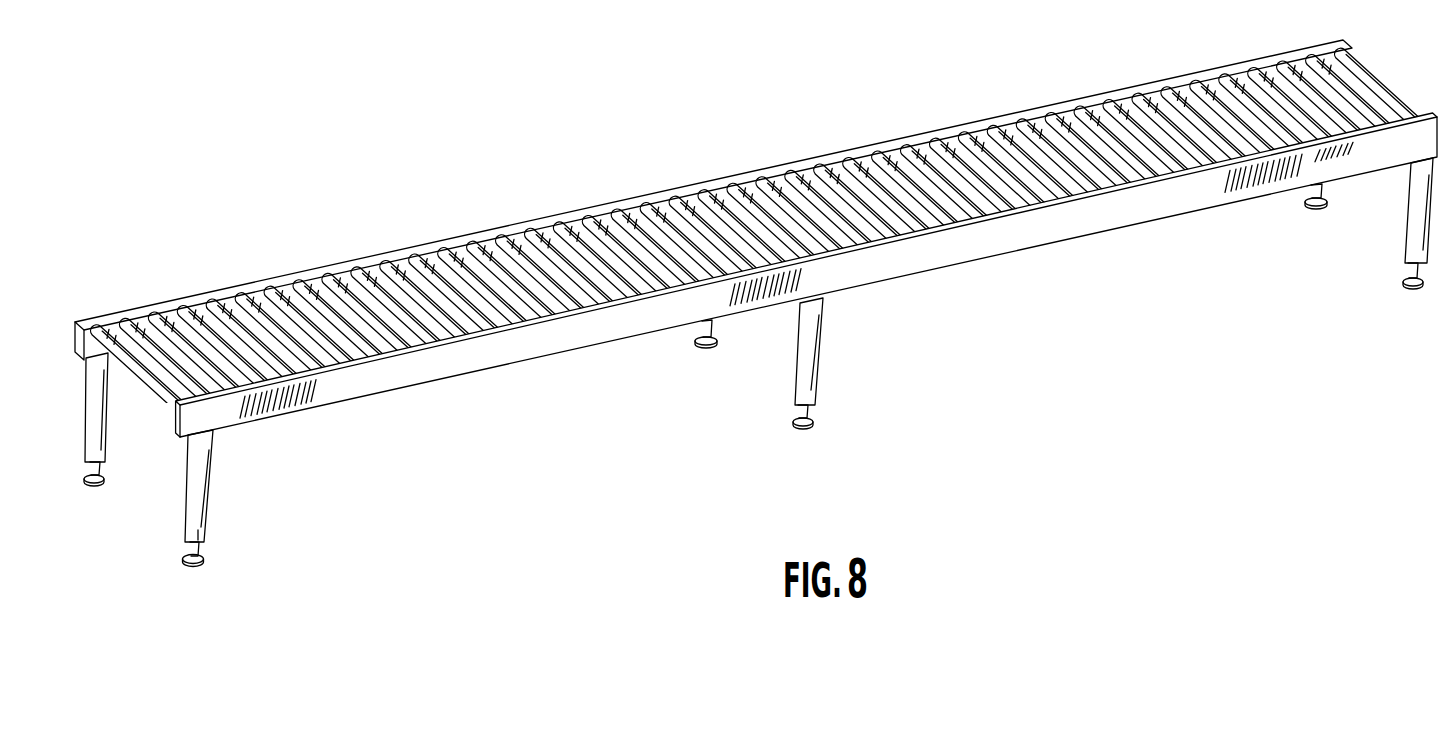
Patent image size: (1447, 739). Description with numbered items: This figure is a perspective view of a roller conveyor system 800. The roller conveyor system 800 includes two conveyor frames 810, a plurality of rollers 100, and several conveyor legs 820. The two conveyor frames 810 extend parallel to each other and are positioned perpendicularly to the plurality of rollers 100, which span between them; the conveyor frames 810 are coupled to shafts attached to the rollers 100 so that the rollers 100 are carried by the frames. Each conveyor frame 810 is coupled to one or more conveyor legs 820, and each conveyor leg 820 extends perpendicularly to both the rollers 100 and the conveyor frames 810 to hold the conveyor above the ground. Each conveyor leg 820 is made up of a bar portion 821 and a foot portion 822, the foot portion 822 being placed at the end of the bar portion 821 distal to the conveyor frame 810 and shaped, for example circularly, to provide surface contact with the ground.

The roller conveyor system 800 is at (257, 143).
The conveyor frame 810 is at (515, 330).
The roller 100 is at (155, 387).
The conveyor leg 820 is at (205, 527).
The bar portion 821 is at (188, 499).
The foot portion 822 is at (192, 566).